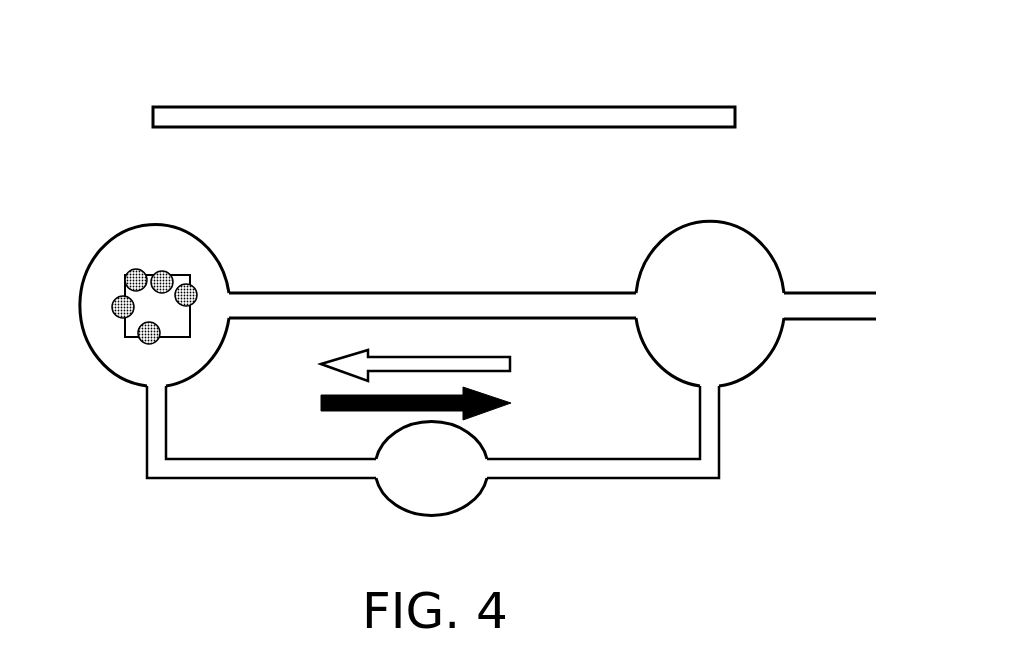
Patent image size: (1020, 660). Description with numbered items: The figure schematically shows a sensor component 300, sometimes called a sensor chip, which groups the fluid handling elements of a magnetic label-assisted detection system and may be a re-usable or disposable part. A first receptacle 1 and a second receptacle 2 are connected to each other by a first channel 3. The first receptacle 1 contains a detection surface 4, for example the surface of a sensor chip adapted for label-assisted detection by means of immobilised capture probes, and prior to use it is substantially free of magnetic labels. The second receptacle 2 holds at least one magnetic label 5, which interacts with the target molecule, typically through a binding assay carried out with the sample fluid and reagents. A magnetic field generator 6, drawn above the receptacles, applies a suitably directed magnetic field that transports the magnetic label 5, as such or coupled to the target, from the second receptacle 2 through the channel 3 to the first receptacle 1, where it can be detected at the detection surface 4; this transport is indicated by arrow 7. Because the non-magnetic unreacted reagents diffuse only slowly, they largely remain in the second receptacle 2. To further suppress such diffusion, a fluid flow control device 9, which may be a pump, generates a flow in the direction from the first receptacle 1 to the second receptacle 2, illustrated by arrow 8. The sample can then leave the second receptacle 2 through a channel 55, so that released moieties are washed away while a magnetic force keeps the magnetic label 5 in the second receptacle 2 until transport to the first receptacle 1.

The sensor component 300 is at (744, 56).
The first receptacle 1 is at (80, 308).
The second receptacle 2 is at (770, 360).
The first channel 3 is at (433, 292).
The detection surface 4 is at (173, 322).
The magnetic label 5 is at (150, 343).
The magnetic field generator 6 is at (491, 128).
The channel 55 is at (828, 292).
The arrow 7 is at (512, 364).
The arrow 8 is at (320, 404).
The fluid flow control device 9 is at (585, 478).